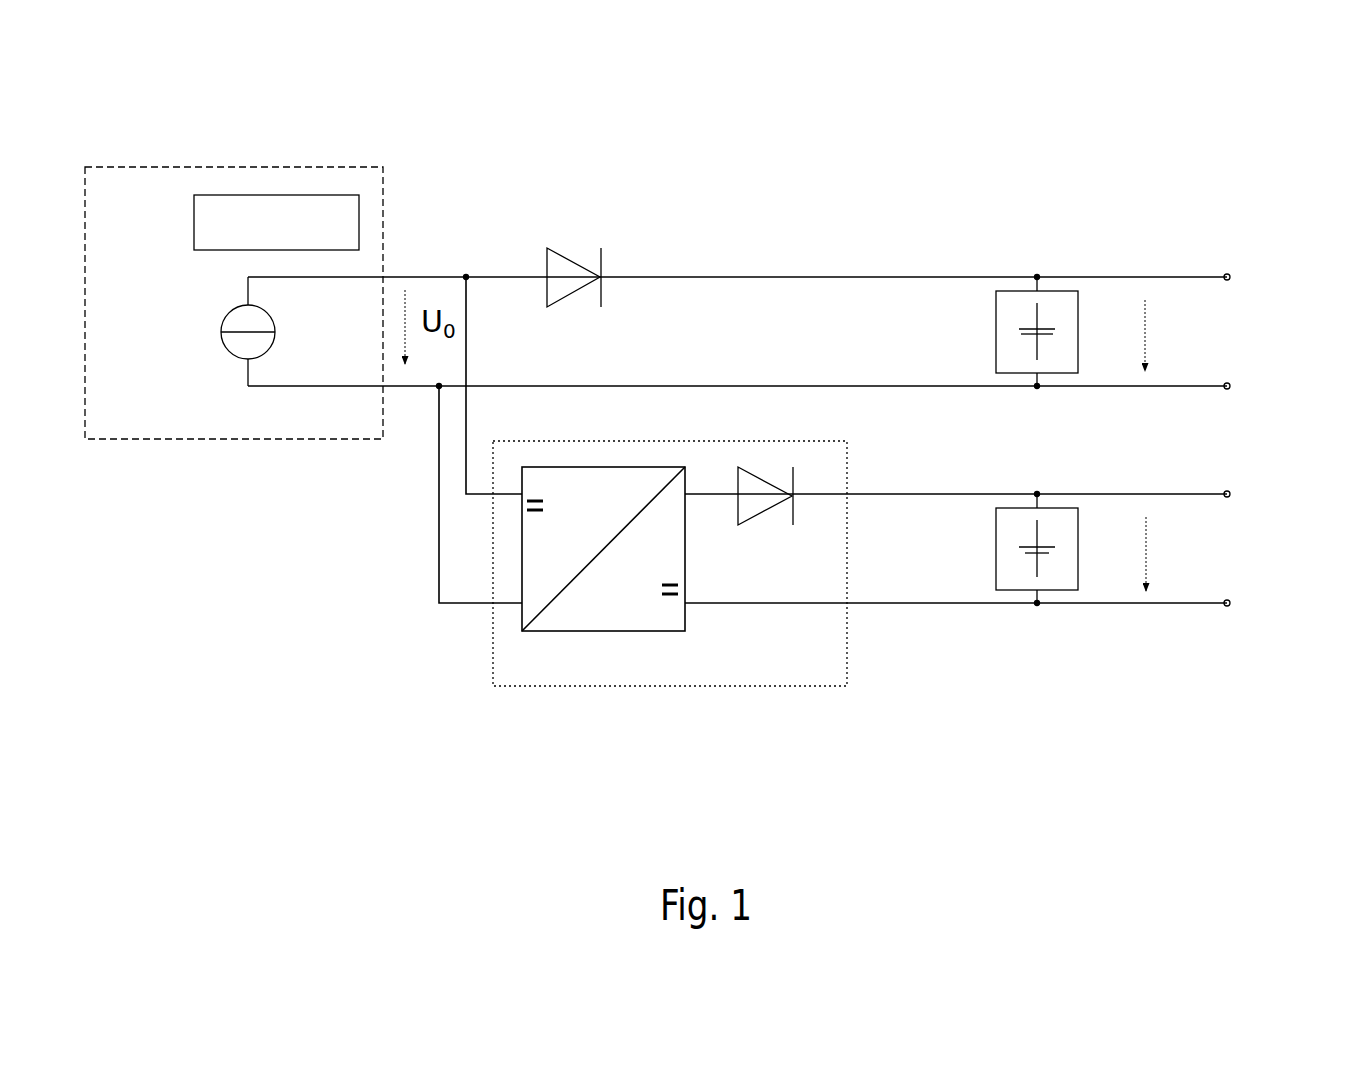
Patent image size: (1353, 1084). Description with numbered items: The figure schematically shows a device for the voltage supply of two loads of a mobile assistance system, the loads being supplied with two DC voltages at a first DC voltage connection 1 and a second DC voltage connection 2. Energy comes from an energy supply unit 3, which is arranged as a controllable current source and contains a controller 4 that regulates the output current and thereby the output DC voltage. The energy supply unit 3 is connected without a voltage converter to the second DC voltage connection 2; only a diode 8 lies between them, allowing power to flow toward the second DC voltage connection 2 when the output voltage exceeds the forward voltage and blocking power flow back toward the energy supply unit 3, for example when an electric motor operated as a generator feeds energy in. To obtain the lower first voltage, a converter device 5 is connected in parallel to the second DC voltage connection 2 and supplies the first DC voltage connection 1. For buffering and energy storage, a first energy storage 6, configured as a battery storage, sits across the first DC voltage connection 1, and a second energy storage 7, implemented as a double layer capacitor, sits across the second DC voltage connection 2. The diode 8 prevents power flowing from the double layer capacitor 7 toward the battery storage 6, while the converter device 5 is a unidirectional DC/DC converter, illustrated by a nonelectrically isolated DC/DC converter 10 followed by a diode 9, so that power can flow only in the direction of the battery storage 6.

The first DC voltage connection 1 is at (1229, 553).
The second DC voltage connection 2 is at (1229, 328).
The energy supply unit 3 is at (383, 217).
The controller 4 is at (284, 239).
The converter device 5 is at (849, 661).
The first energy storage 6 is at (1058, 575).
The second energy storage 7 is at (1058, 308).
The diode 8 is at (577, 252).
The diode 9 is at (771, 472).
The DC/DC converter 10 is at (613, 608).